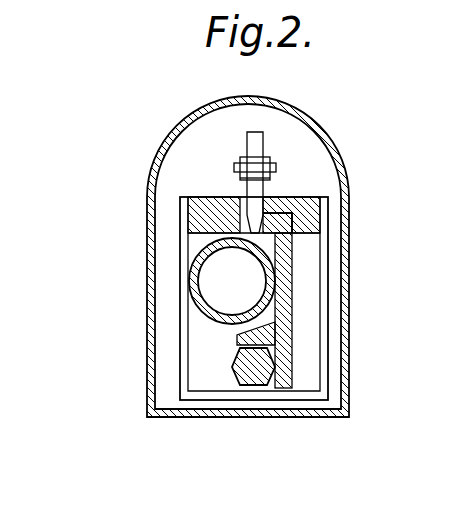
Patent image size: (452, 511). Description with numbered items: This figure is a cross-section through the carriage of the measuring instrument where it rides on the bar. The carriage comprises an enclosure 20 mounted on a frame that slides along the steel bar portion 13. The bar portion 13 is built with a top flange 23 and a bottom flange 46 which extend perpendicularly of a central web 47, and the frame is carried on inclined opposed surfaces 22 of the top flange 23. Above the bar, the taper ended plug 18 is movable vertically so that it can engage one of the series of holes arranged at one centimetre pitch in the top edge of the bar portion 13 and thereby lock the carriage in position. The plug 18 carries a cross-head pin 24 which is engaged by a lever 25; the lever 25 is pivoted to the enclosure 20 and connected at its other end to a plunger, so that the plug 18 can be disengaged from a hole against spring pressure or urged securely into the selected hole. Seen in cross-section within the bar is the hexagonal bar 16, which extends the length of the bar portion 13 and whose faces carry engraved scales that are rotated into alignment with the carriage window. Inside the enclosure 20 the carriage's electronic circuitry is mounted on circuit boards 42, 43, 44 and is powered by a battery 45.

The enclosure 20 is at (282, 103).
The plug 18 is at (260, 142).
The cross-head pin 24 is at (270, 167).
The lever 25 is at (243, 178).
The inclined opposed surfaces 22 is at (325, 205).
The top flange 23 is at (285, 243).
The bar portion 13 is at (293, 273).
The central web 47 is at (285, 300).
The circuit board 42 is at (332, 343).
The battery 45 is at (208, 287).
The circuit board 44 is at (180, 349).
The bottom flange 46 is at (238, 332).
The hexagonal bar 16 is at (262, 383).
The circuit board 43 is at (290, 394).